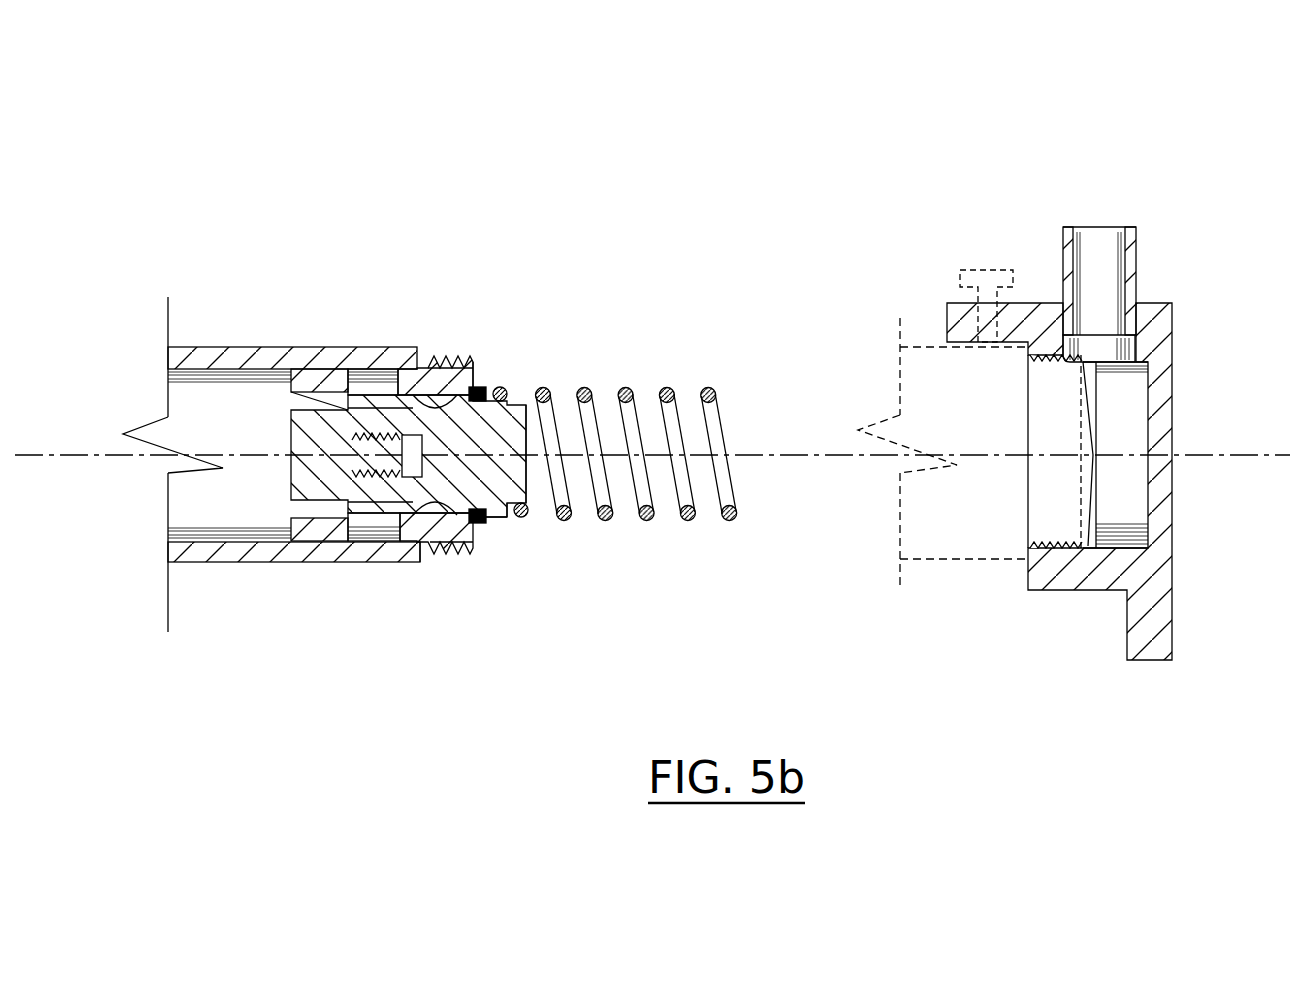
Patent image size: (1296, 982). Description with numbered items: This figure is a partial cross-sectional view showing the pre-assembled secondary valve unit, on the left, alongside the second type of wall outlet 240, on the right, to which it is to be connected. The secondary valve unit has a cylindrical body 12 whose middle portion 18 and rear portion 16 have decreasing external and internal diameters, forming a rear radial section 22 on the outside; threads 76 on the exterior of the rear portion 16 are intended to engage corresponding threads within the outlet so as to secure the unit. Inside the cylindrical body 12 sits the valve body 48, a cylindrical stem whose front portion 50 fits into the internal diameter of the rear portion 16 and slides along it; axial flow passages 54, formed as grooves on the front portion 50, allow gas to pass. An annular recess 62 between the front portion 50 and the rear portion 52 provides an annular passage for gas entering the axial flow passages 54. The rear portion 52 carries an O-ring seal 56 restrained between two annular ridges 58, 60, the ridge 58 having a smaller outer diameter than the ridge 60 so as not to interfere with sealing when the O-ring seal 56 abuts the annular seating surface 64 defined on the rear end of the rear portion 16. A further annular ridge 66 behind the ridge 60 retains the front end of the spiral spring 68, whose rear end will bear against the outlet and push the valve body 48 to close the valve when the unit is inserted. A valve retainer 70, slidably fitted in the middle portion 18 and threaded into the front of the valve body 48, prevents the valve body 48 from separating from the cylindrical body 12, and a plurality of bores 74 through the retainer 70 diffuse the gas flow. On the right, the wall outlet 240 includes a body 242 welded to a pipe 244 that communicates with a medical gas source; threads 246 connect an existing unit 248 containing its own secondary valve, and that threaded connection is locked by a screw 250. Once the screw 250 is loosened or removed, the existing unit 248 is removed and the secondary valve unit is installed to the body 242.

The cylindrical body 12 is at (196, 343).
The middle portion 18 is at (253, 347).
The front portion 50 is at (366, 420).
The axial flow passages 54 is at (396, 397).
The rear portion 16 is at (434, 360).
The threads 76 is at (450, 358).
The valve body 48 is at (489, 339).
The O-ring seal 56 is at (481, 384).
The spiral spring 68 is at (627, 388).
The valve retainer 70 is at (302, 467).
The bores 74 is at (312, 507).
The rear radial section 22 is at (432, 553).
The annular recess 62 is at (462, 526).
The annular ridge 58 is at (473, 524).
The annular seating surface 64 is at (500, 516).
The annular ridge 60 is at (497, 527).
The rear portion 52 is at (524, 518).
The annular ridge 66 is at (528, 505).
The wall outlet 240 is at (1077, 444).
The body 242 is at (1172, 428).
The pipe 244 is at (1136, 268).
The threads 246 is at (1071, 537).
The existing unit 248 is at (958, 562).
The screw 250 is at (990, 270).